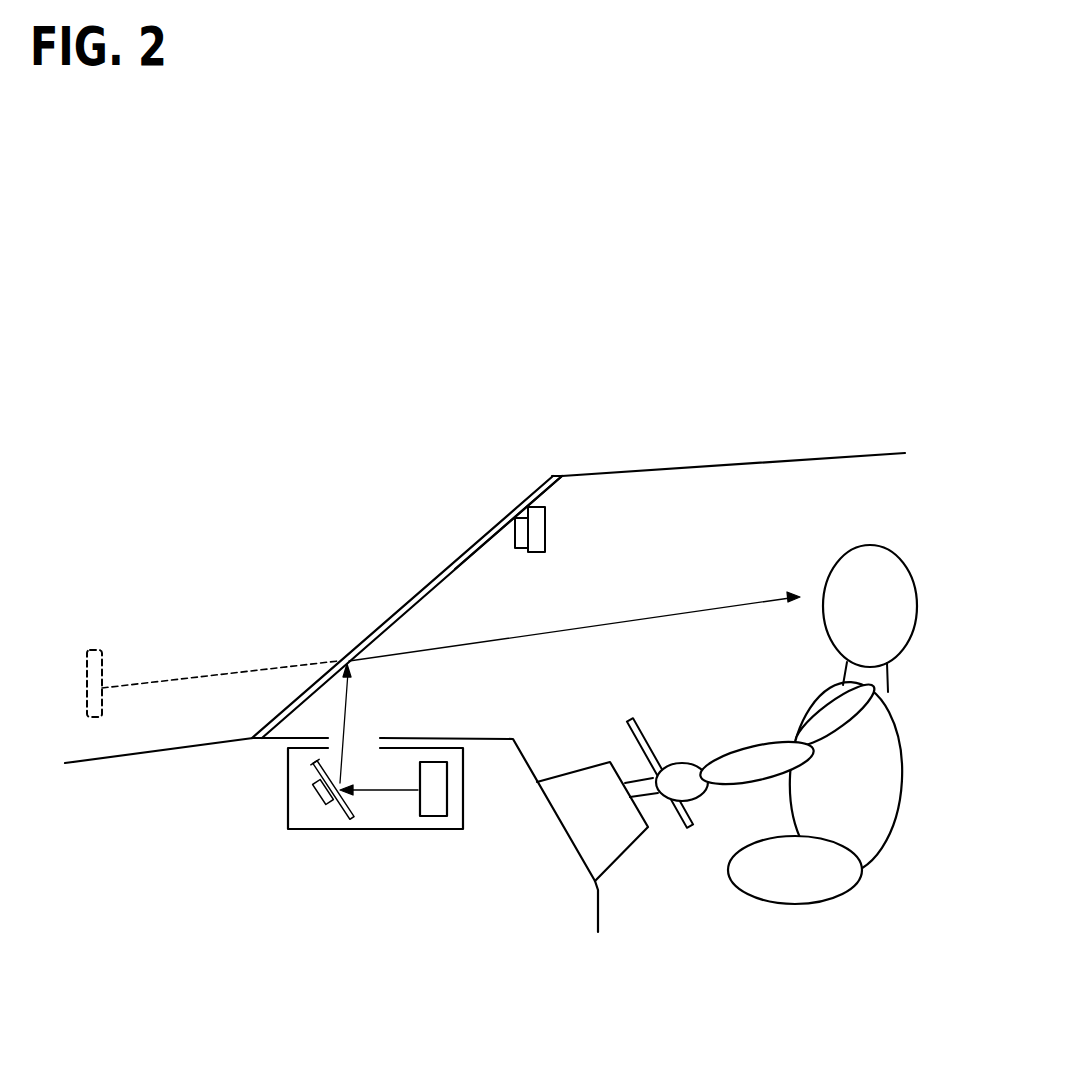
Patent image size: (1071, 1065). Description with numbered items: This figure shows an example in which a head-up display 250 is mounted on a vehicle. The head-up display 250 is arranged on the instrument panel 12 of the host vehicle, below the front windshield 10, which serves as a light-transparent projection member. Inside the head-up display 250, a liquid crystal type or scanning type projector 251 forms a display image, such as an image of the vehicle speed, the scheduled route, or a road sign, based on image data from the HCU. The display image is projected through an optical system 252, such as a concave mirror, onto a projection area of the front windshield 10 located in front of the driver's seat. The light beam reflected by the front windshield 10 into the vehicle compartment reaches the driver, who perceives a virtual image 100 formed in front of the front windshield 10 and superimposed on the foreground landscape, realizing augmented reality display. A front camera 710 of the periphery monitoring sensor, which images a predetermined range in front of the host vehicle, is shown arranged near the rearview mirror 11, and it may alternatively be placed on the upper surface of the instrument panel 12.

The front windshield 10 is at (408, 603).
The front camera 710 is at (502, 528).
The rearview mirror 11 is at (545, 527).
The instrument panel 12 is at (477, 738).
The virtual image 100 is at (90, 651).
The head-up display 250 is at (280, 834).
The projector 251 is at (423, 817).
The optical system 252 is at (318, 773).